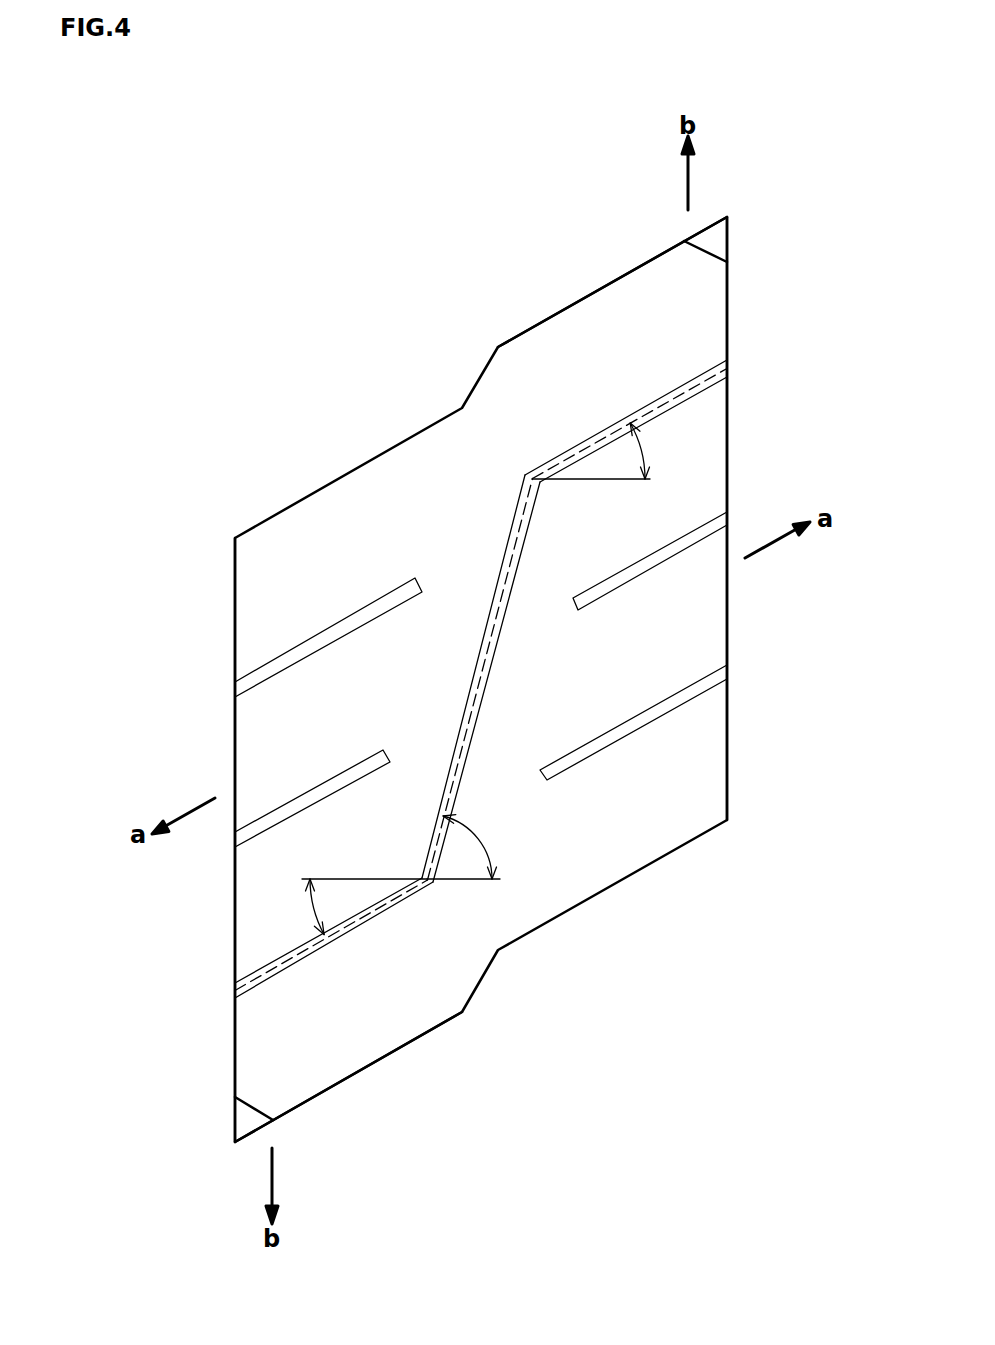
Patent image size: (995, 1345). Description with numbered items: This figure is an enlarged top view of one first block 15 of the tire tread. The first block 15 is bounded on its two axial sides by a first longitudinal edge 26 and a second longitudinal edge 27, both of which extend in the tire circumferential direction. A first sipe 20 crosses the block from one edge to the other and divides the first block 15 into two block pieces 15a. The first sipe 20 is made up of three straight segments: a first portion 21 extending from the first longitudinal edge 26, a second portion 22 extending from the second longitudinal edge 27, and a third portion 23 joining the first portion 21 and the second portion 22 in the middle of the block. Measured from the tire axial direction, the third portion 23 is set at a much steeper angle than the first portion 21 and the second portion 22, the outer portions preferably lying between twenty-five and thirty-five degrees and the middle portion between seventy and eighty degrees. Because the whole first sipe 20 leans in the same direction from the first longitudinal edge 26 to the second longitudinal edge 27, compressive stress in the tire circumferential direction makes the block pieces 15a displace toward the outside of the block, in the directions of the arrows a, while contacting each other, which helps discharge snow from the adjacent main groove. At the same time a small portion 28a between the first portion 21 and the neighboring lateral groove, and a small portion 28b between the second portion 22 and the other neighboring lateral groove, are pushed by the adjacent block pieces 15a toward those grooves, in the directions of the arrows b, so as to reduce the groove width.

The first block 15 is at (241, 480).
The block piece 15a is at (348, 712).
The first sipe 20 is at (260, 968).
The first portion 21 is at (292, 962).
The second portion 22 is at (668, 397).
The third portion 23 is at (490, 655).
The first longitudinal edge 26 is at (235, 612).
The second longitudinal edge 27 is at (727, 723).
The small portion 28a is at (298, 1035).
The small portion 28b is at (662, 322).